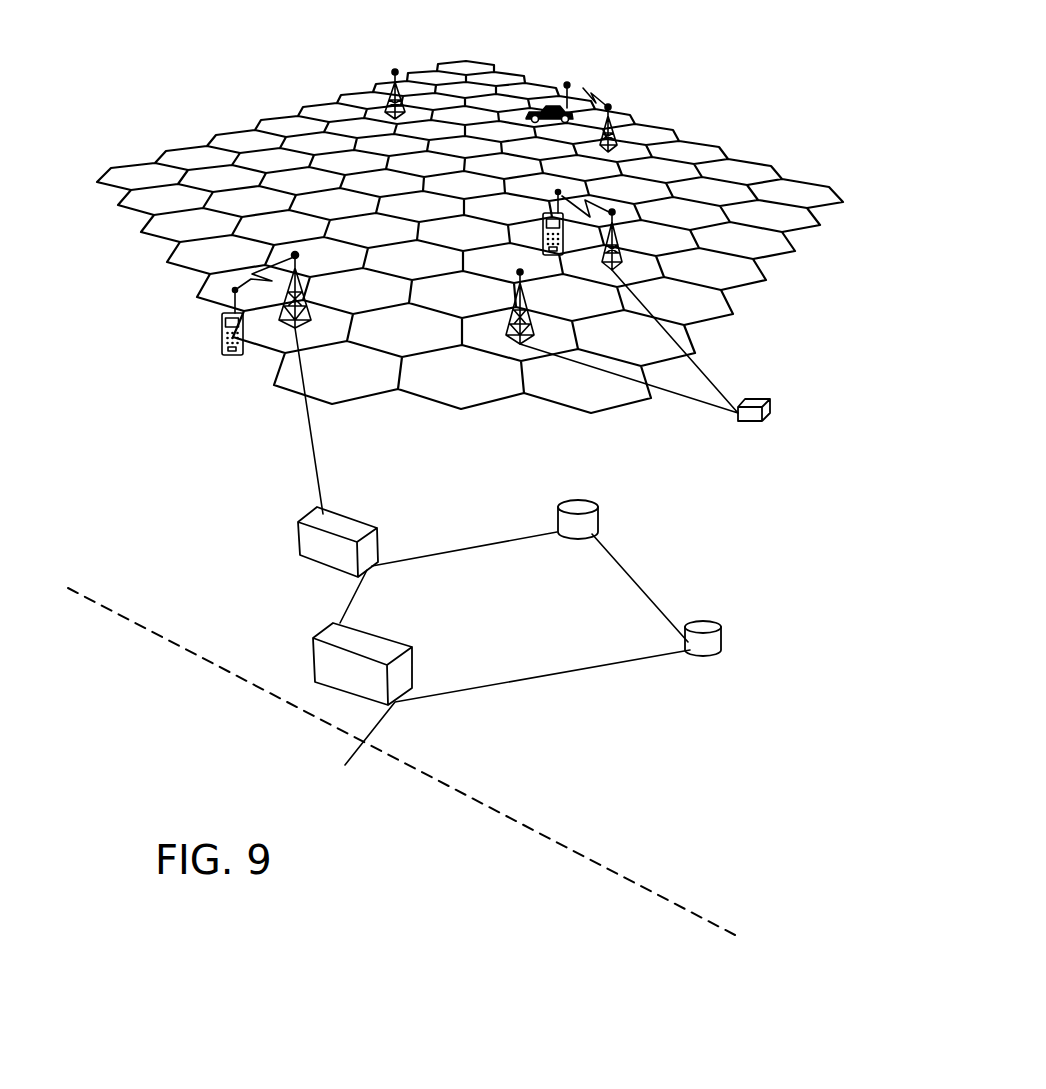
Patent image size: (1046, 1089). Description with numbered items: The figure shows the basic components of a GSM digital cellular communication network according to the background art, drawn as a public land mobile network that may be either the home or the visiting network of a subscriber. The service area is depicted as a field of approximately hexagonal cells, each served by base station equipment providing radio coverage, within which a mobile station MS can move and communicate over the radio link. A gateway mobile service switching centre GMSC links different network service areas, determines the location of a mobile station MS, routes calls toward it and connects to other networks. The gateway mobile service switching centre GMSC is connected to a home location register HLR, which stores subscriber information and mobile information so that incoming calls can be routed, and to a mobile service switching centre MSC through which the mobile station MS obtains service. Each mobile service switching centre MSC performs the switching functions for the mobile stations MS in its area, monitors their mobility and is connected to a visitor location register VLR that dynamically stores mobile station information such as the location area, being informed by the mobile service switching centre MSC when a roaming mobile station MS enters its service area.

The mobile station MS is at (222, 323).
The mobile service switching centre MSC is at (352, 518).
The gateway mobile service switching centre GMSC is at (400, 646).
The visitor location register VLR is at (592, 500).
The home location register HLR is at (708, 619).